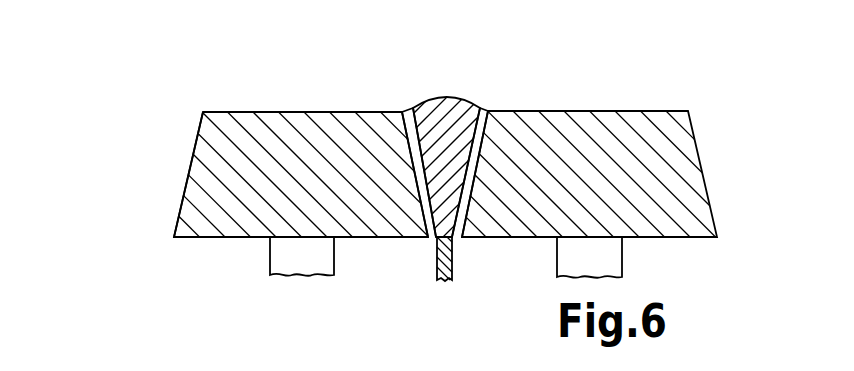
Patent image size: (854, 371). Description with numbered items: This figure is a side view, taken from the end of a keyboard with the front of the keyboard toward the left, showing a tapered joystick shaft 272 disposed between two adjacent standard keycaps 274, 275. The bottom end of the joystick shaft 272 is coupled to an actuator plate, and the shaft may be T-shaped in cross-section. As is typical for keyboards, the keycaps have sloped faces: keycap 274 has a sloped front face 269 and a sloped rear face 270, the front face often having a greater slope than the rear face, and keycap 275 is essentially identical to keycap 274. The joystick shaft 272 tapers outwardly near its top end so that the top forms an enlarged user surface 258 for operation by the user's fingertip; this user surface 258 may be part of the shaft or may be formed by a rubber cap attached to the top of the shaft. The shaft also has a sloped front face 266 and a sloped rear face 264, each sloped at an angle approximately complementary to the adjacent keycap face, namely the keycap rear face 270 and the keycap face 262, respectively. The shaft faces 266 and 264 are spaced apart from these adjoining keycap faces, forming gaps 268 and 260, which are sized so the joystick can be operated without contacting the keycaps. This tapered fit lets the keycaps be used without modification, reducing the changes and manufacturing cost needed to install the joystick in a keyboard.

The user surface 258 is at (448, 98).
The gap 260 is at (486, 116).
The keycap face 262 is at (472, 112).
The rear face 264 is at (463, 180).
The front face 266 is at (426, 178).
The gap 268 is at (410, 116).
The sloped front face 269 is at (192, 163).
The sloped rear face 270 is at (411, 109).
The joystick shaft 272 is at (453, 250).
The keycap 274 is at (228, 112).
The keycap 275 is at (652, 110).